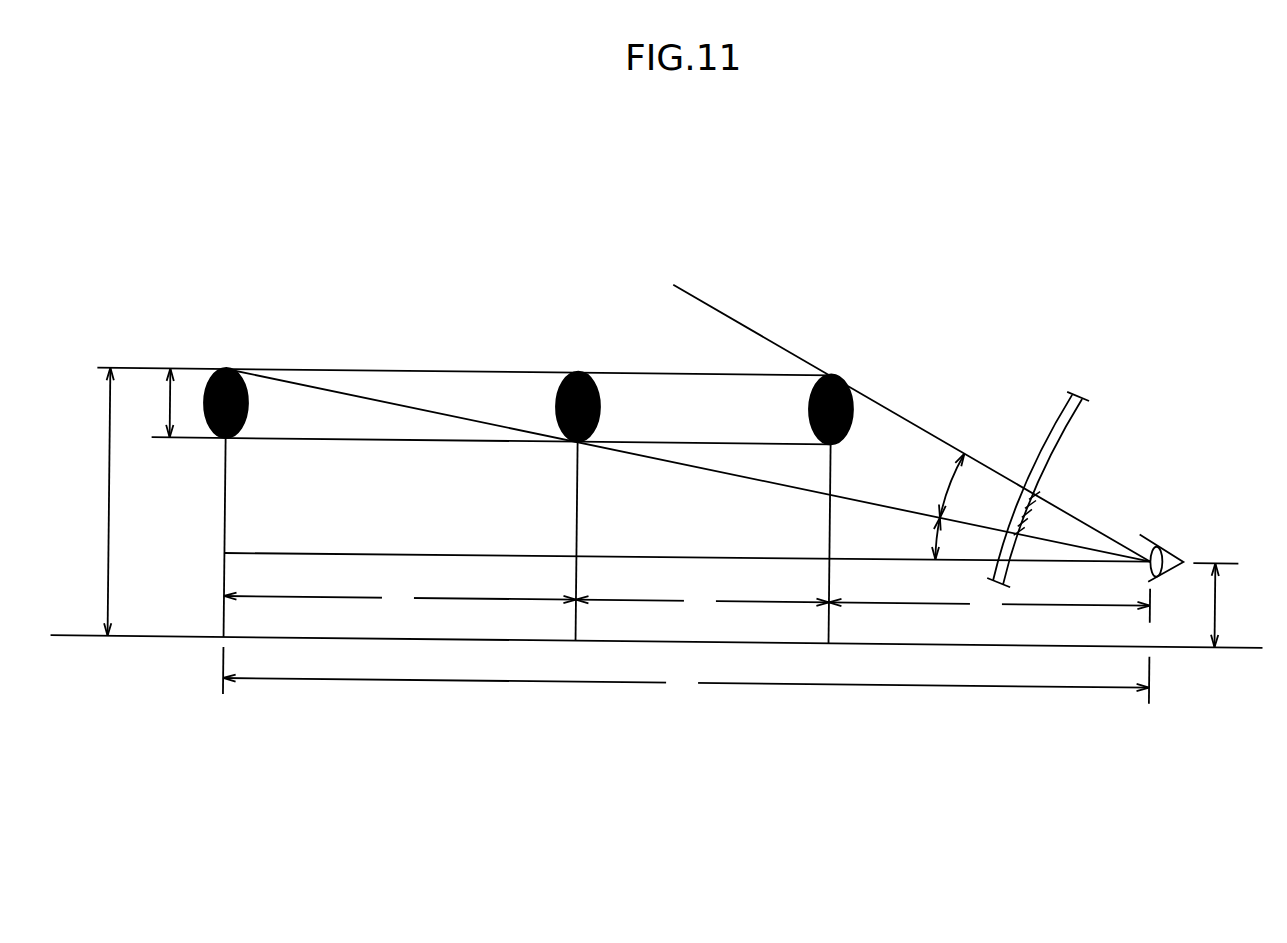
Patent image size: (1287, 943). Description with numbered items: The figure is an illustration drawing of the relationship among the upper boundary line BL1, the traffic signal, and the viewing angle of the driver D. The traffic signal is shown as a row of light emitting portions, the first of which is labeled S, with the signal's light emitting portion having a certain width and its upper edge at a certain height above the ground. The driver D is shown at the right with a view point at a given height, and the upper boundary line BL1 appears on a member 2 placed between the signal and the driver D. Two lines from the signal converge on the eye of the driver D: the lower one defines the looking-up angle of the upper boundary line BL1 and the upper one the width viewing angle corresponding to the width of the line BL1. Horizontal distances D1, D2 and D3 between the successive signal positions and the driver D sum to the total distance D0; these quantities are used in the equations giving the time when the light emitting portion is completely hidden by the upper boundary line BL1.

The optical element (lens / display panel) 2 is at (1083, 412).
The light source S is at (226, 369).
The driver D is at (1144, 527).
The upper boundary line BL1 is at (1035, 504).
The distance between first and second light sources D1 is at (400, 600).
The distance between second and third light sources D2 is at (702, 603).
The distance between third light source and eye D3 is at (989, 604).
The total distance from light source to eye D0 is at (686, 677).